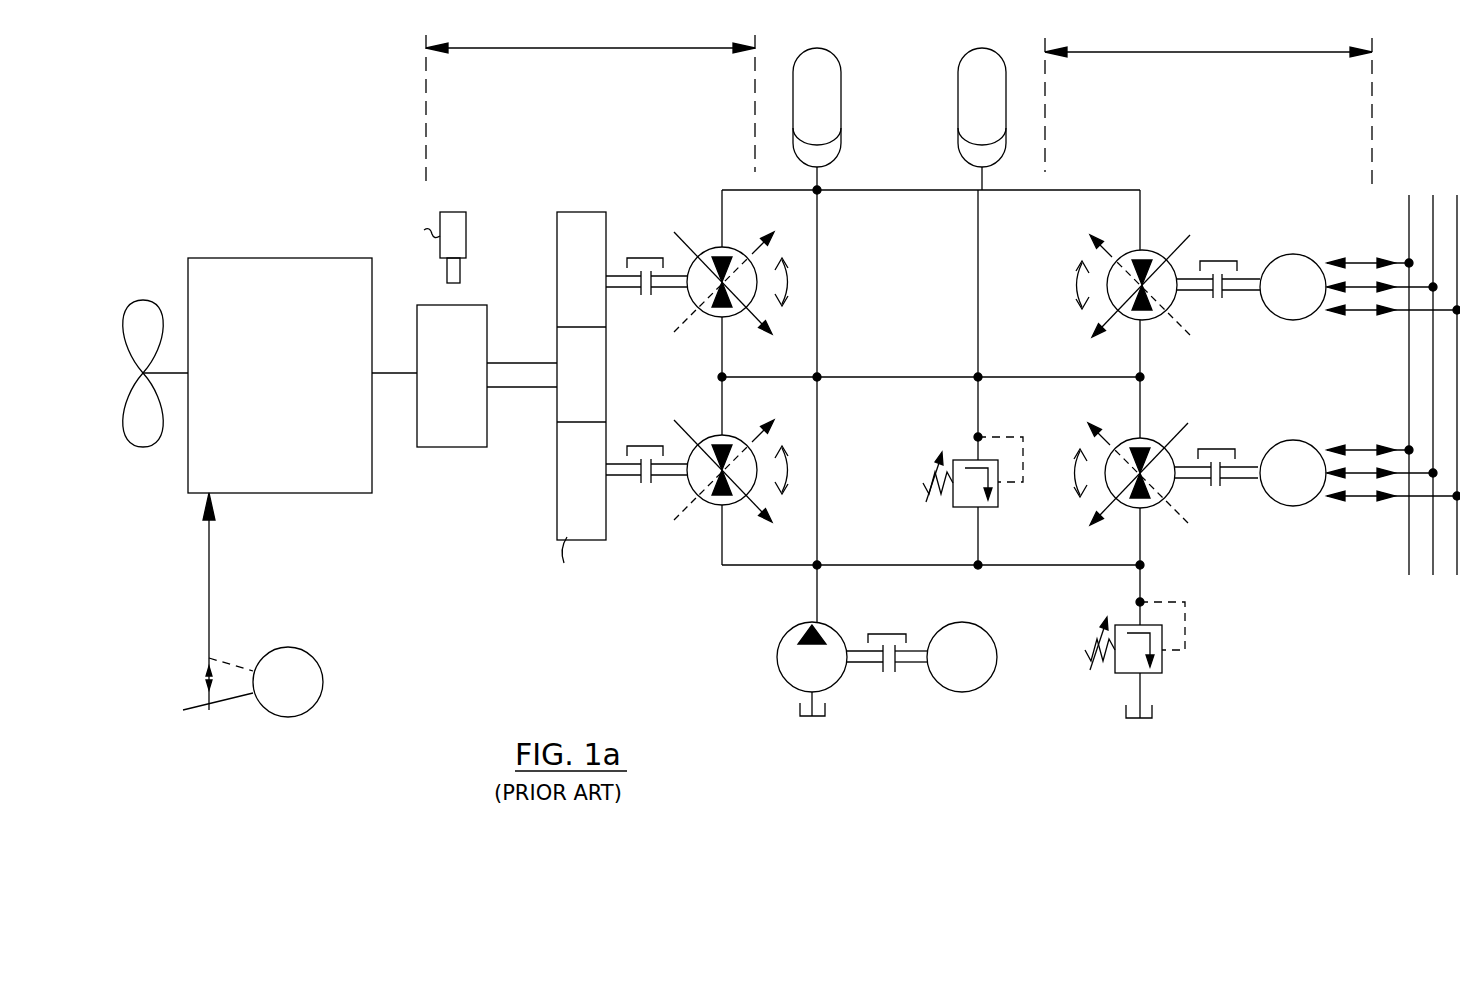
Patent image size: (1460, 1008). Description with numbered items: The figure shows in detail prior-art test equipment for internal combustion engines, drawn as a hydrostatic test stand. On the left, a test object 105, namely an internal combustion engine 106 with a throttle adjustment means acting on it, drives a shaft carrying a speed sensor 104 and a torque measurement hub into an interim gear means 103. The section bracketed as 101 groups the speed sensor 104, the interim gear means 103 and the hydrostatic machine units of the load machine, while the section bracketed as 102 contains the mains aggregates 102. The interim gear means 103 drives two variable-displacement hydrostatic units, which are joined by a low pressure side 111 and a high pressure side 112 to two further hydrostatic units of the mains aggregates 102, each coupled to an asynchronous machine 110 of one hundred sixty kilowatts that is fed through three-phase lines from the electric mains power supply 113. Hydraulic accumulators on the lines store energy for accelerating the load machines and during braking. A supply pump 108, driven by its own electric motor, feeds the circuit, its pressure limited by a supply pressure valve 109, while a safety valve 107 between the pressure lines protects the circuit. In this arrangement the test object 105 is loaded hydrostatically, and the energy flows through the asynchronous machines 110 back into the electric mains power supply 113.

The test stand drive unit (mechanical section) 101 is at (590, 101).
The mains aggregates 102 is at (1208, 105).
The interim gear means 103 is at (578, 210).
The speed sensor 104 is at (458, 210).
The test object 105 is at (358, 475).
The internal combustion engine 106 is at (308, 652).
The pressure relief valve 107 is at (953, 507).
The supply pump 108 is at (786, 686).
The supply pressure valve 109 is at (1115, 675).
The asynchronous machine 110 is at (1200, 377).
The low pressure side 111 is at (893, 190).
The high pressure side 112 is at (862, 377).
The electric mains power supply 113 is at (1393, 337).